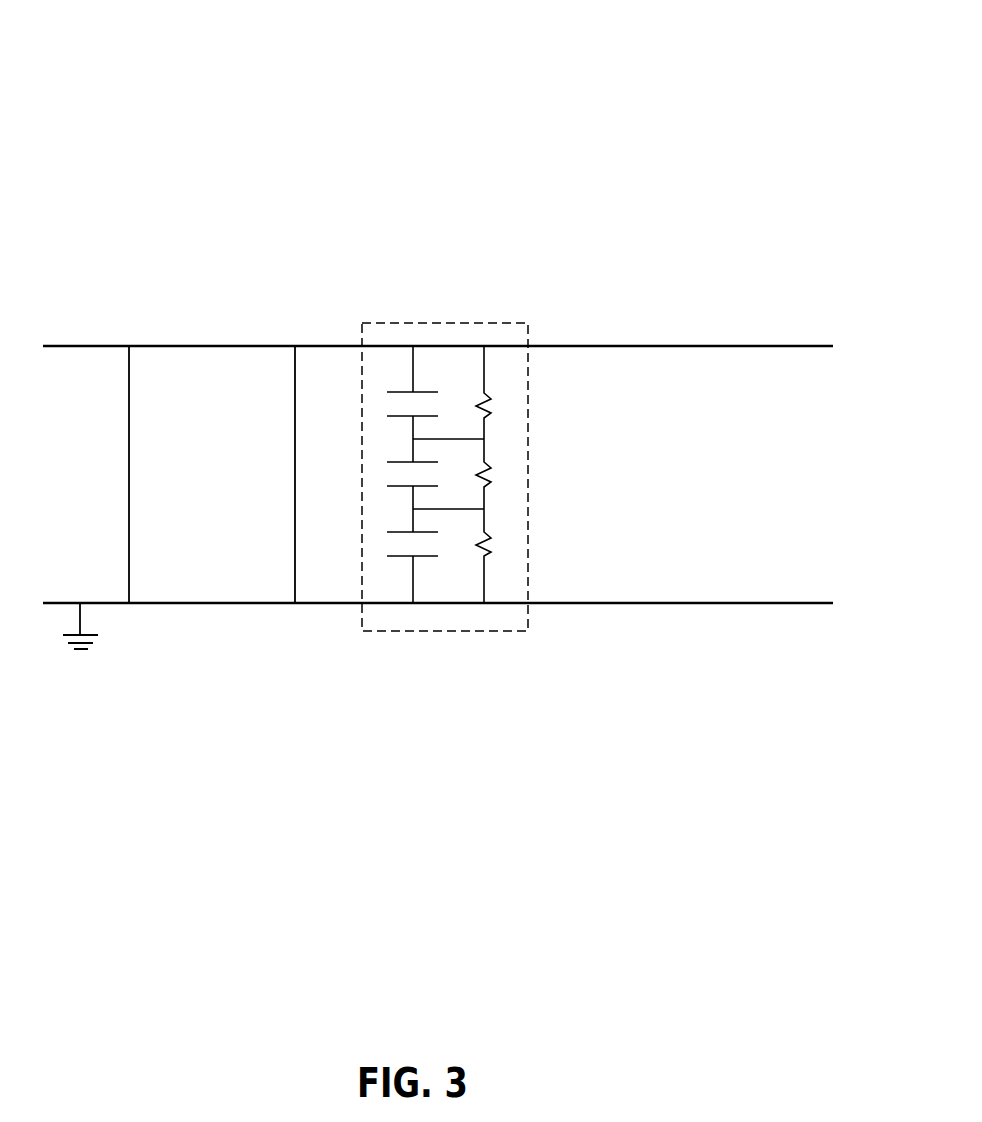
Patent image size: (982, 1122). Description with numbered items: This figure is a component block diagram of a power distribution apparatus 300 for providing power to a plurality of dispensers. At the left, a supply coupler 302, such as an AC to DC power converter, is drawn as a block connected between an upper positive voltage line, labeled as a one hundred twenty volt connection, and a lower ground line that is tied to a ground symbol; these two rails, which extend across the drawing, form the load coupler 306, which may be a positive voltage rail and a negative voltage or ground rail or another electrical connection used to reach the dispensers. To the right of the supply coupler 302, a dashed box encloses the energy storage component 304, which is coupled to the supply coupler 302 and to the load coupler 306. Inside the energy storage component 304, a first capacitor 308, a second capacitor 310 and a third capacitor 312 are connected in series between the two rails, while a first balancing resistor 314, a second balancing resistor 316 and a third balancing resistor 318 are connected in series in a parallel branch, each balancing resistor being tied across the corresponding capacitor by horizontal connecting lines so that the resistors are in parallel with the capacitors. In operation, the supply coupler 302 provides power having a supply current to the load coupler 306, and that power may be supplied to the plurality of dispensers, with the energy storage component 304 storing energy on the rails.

The power distribution apparatus 300 is at (215, 71).
The supply coupler 302 is at (205, 346).
The energy storage component 304 is at (437, 323).
The load coupler 306 is at (555, 346).
The first capacitor 308 is at (410, 390).
The second capacitor 310 is at (410, 460).
The third capacitor 312 is at (410, 530).
The first balancing resistor 314 is at (487, 397).
The second balancing resistor 316 is at (487, 465).
The third balancing resistor 318 is at (487, 535).